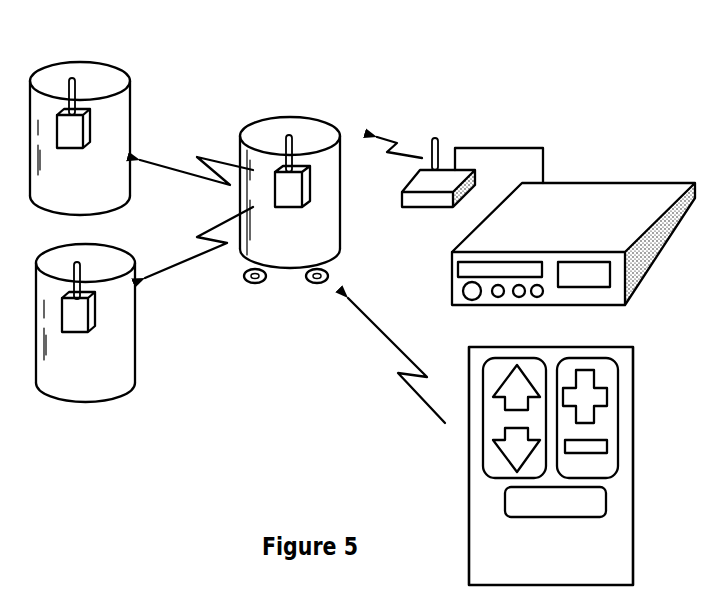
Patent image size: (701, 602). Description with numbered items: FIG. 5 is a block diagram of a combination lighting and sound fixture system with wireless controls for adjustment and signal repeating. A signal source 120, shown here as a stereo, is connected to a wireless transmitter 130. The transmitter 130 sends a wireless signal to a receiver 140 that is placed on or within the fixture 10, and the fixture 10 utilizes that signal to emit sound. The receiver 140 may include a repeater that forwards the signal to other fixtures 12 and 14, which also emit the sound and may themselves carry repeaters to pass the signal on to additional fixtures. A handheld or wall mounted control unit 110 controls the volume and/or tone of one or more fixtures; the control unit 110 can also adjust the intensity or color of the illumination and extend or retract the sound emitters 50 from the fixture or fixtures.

The fixture 10 is at (333, 203).
The fixture 12 is at (133, 62).
The fixture 14 is at (133, 405).
The sound emitters 50 is at (313, 283).
The control unit 110 is at (468, 455).
The signal source 120 is at (598, 182).
The wireless transmitter 130 is at (465, 170).
The receiver 140 is at (303, 172).